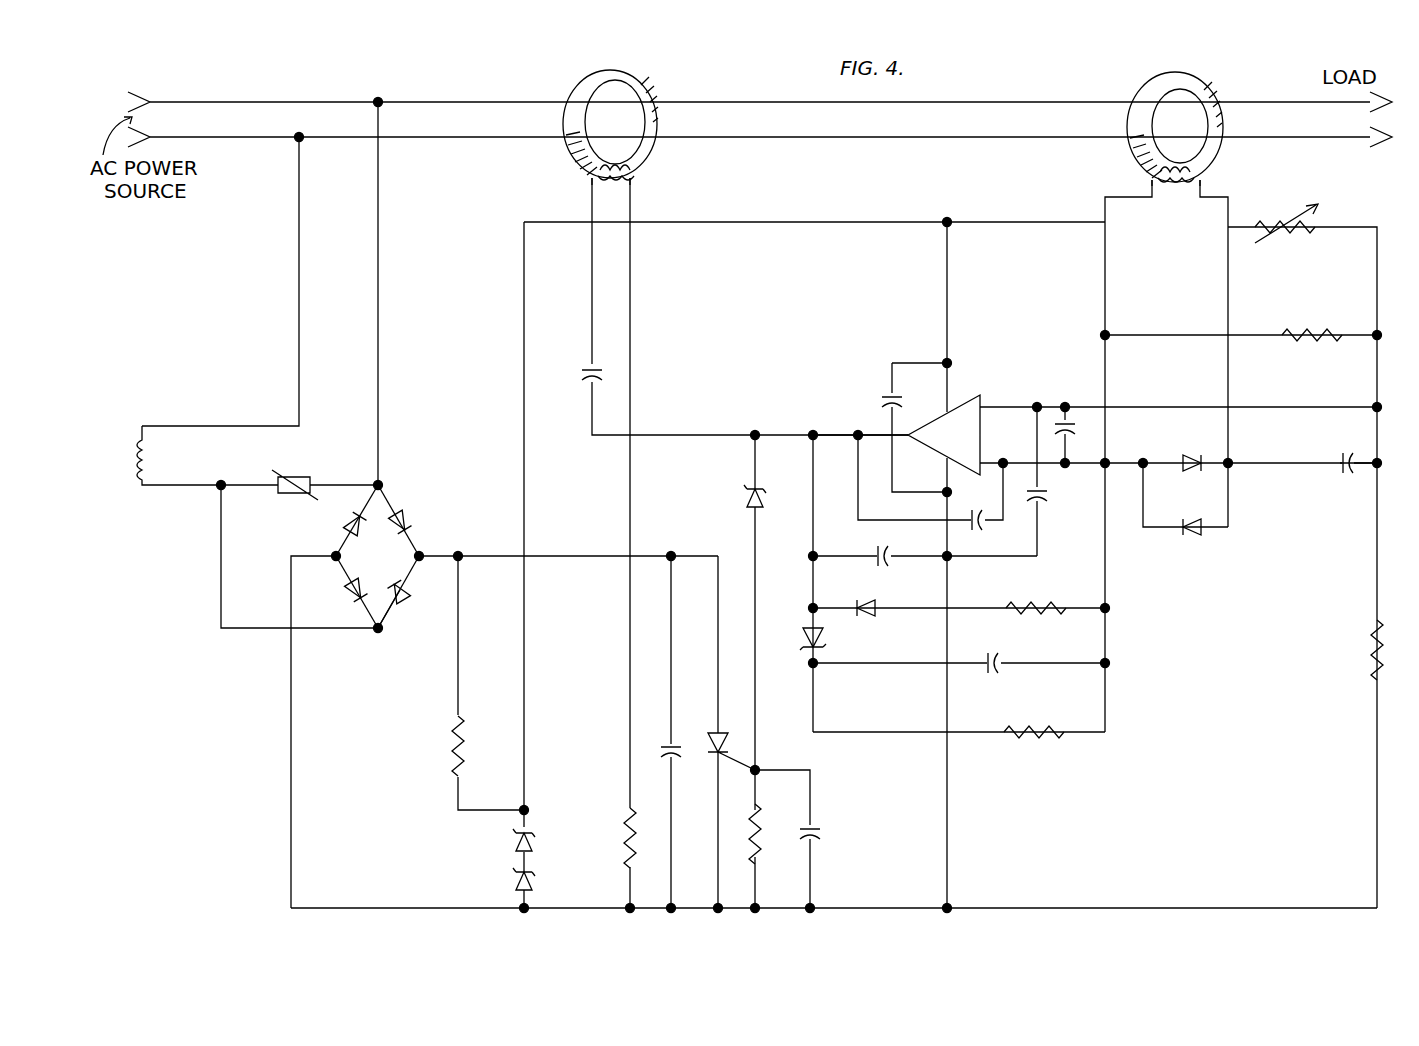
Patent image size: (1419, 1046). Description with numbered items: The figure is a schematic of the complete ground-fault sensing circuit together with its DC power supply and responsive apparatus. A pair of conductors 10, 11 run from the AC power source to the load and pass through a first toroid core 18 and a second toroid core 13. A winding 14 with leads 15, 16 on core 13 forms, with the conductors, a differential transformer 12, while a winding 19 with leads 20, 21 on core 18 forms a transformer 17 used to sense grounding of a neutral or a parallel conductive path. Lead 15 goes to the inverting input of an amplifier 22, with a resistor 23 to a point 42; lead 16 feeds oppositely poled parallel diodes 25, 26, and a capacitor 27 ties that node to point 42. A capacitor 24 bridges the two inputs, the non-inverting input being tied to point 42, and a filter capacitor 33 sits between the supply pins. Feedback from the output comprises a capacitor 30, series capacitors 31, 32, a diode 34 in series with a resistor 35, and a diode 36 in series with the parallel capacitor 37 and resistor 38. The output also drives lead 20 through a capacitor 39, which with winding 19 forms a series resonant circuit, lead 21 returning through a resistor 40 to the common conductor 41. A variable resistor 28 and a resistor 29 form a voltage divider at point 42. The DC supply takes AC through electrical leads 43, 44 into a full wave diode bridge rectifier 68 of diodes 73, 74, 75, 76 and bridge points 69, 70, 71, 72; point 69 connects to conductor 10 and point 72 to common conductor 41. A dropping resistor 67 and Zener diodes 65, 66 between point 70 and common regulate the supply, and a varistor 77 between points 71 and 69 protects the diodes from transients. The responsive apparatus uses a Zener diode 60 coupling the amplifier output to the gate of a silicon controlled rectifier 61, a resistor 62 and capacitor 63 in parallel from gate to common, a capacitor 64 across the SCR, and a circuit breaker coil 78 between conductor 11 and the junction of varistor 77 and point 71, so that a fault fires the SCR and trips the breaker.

The conductor 10 is at (262, 98).
The conductor 11 is at (236, 138).
The differential transformer 12 is at (1234, 95).
The second toroid core 13 is at (1132, 88).
The winding 14 is at (1140, 178).
The lead 15 is at (1098, 292).
The lead 16 is at (1236, 281).
The transformer 17 is at (567, 78).
The first toroid core 18 is at (644, 82).
The winding 19 is at (588, 172).
The lead 20 is at (588, 280).
The lead 21 is at (632, 282).
The amplifier 22 is at (1137, 433).
The resistor 23 is at (1312, 330).
The capacitor 24 is at (1066, 402).
The diode 25 is at (1187, 456).
The diode 26 is at (1190, 534).
The capacitor 27 is at (1348, 450).
The variable resistor 28 is at (1298, 239).
The resistor 29 is at (1368, 652).
The capacitor 30 is at (980, 526).
The capacitor 31 is at (872, 550).
The capacitor 32 is at (1040, 502).
The filter capacitor 33 is at (882, 390).
The diode 34 is at (882, 596).
The resistor 35 is at (1038, 602).
The diode 36 is at (824, 638).
The capacitor 37 is at (1002, 656).
The resistor 38 is at (1025, 732).
The capacitor 39 is at (586, 360).
The resistor 40 is at (620, 820).
The common conductor 41 is at (596, 908).
The point 42 is at (1375, 404).
The electrical lead 43 is at (378, 276).
The electrical lead 44 is at (293, 272).
The Zener diode 60 is at (738, 496).
The silicon controlled rectifier 61 is at (726, 734).
The resistor 62 is at (758, 830).
The capacitor 63 is at (822, 832).
The capacitor 64 is at (684, 752).
The Zener diode 65 is at (534, 838).
The Zener diode 66 is at (512, 882).
The resistor 67 is at (450, 749).
The full wave diode bridge rectifier 68 is at (392, 618).
The bridge point 69 is at (382, 482).
The bridge point 70 is at (432, 553).
The bridge point 71 is at (378, 628).
The bridge point 72 is at (328, 554).
The diode 73 is at (346, 516).
The diode 74 is at (342, 600).
The diode 75 is at (412, 520).
The diode 76 is at (404, 588).
The varistor 77 is at (297, 477).
The circuit breaker coil 78 is at (152, 462).